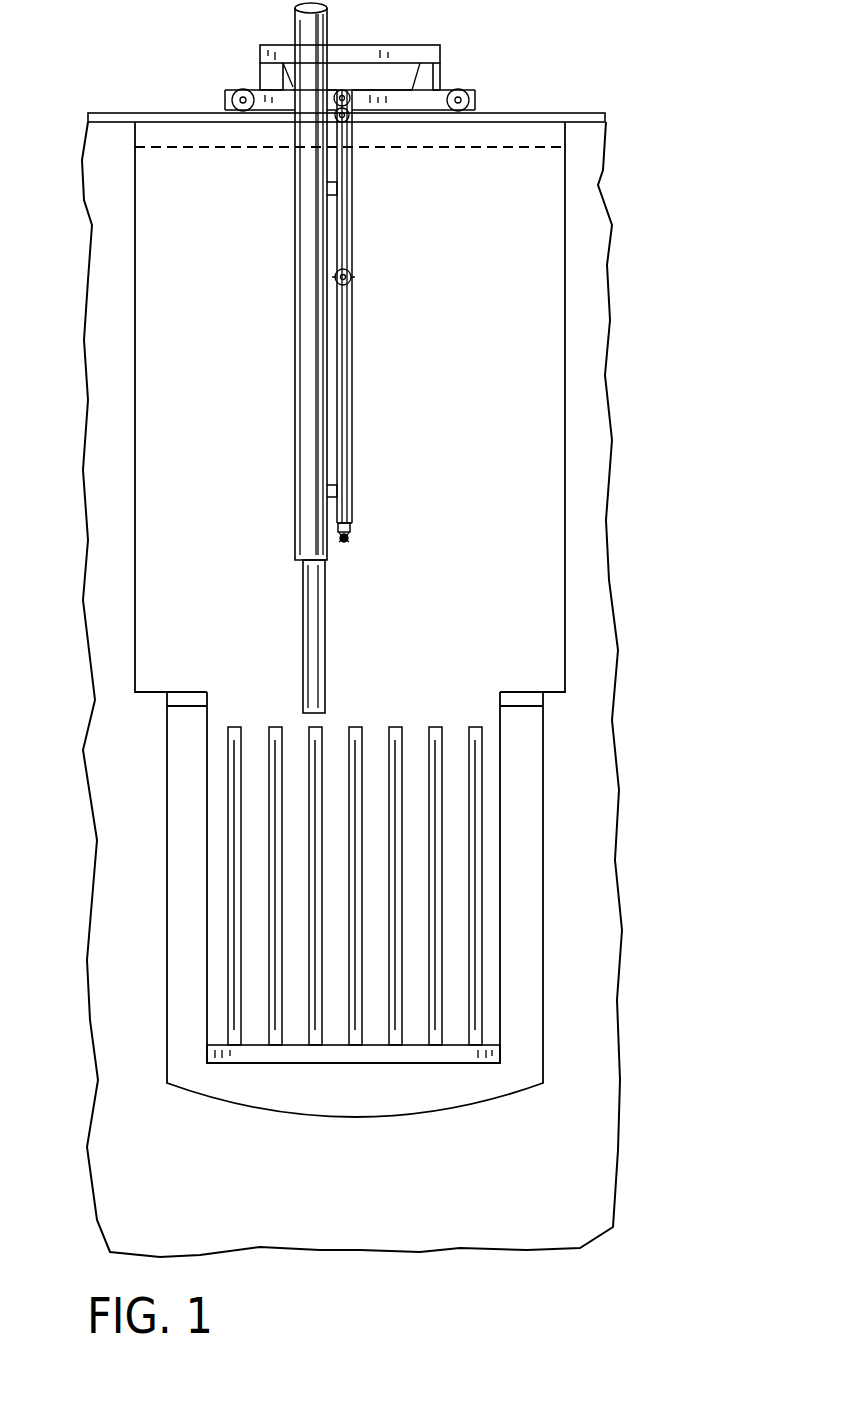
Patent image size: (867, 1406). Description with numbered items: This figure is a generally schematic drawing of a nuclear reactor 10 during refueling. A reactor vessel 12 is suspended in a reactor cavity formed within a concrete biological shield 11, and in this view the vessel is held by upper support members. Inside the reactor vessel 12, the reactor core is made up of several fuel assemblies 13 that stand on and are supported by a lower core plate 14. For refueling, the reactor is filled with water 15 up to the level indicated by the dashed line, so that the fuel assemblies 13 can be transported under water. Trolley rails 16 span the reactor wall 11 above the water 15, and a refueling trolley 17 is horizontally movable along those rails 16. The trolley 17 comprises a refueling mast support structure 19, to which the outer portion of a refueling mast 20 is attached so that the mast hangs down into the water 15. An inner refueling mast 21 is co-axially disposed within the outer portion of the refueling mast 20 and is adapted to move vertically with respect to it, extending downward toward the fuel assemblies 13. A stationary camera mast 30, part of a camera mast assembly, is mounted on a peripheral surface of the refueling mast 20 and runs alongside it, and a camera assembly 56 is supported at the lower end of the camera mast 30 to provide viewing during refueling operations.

The nuclear reactor 10 is at (652, 146).
The concrete biological shield 11 is at (108, 602).
The reactor vessel 12 is at (205, 827).
The fuel assemblies 13 is at (473, 727).
The lower core plate 14 is at (497, 1052).
The water 15 is at (193, 288).
The trolley rails 16 is at (170, 113).
The refueling trolley 17 is at (468, 90).
The refueling mast support structure 19 is at (378, 53).
The refueling mast 20 is at (308, 405).
The inner refueling mast 21 is at (308, 620).
The camera mast 30 is at (347, 415).
The camera assembly 56 is at (345, 540).